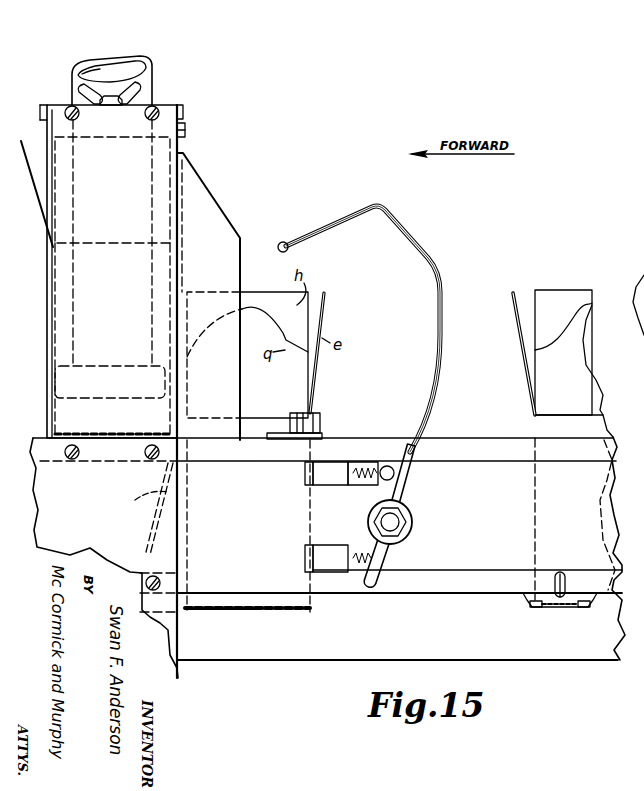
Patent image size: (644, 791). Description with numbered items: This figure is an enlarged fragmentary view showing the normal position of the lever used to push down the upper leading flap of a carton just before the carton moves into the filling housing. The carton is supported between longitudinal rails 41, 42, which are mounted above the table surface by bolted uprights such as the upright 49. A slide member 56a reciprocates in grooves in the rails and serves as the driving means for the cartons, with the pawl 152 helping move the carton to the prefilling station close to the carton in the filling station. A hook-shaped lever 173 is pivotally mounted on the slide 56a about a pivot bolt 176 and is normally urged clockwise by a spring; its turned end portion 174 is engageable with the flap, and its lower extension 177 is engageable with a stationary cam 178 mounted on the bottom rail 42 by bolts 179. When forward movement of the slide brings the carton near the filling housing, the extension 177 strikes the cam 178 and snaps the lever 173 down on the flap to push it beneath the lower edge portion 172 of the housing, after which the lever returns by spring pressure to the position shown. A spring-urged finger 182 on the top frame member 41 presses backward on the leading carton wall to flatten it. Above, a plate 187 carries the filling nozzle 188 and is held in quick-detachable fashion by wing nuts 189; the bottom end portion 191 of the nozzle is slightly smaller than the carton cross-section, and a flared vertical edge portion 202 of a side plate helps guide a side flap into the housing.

The rail 41 is at (470, 446).
The rail 42 is at (468, 583).
The upright 49 is at (99, 391).
The slide member 56a is at (484, 513).
The pawl 152 is at (349, 517).
The lower edge portion 172 is at (200, 363).
The hook-shaped lever 173 is at (411, 230).
The turned end portion 174 is at (283, 243).
The pivot bolt 176 is at (397, 520).
The lower extension 177 is at (378, 563).
The stationary cam 178 is at (566, 585).
The bolts 179 is at (535, 607).
The finger 182 is at (275, 432).
The plate 187 is at (184, 108).
The filling nozzle 188 is at (150, 78).
The wing nuts 189 is at (78, 92).
The bottom end portion 191 is at (100, 383).
The flared vertical edge portion 202 is at (208, 231).